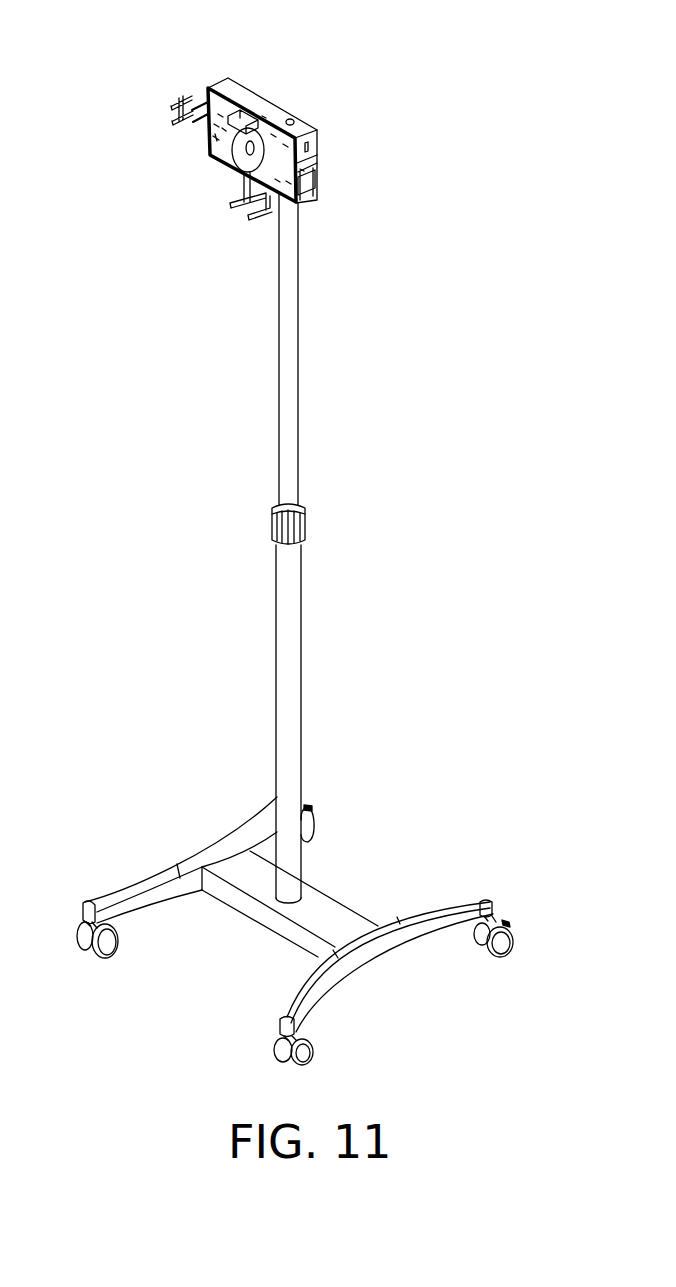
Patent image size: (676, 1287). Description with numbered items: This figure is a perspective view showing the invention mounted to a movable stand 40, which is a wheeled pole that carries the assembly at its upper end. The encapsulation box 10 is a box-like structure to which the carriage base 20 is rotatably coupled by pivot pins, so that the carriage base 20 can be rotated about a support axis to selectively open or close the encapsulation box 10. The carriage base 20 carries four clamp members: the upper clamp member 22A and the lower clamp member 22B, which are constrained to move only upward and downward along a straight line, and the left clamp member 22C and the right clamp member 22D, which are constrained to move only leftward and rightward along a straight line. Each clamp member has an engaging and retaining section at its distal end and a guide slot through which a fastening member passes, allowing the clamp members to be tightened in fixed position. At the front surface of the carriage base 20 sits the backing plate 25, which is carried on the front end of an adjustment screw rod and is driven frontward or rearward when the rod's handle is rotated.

The encapsulation box 10 is at (233, 90).
The carriage base 20 is at (212, 141).
The upper clamp member 22A is at (252, 120).
The lower clamp member 22B is at (260, 213).
The left clamp member 22C is at (188, 108).
The right clamp member 22D is at (317, 188).
The backing plate 25 is at (250, 165).
The stand pole 40 is at (291, 622).